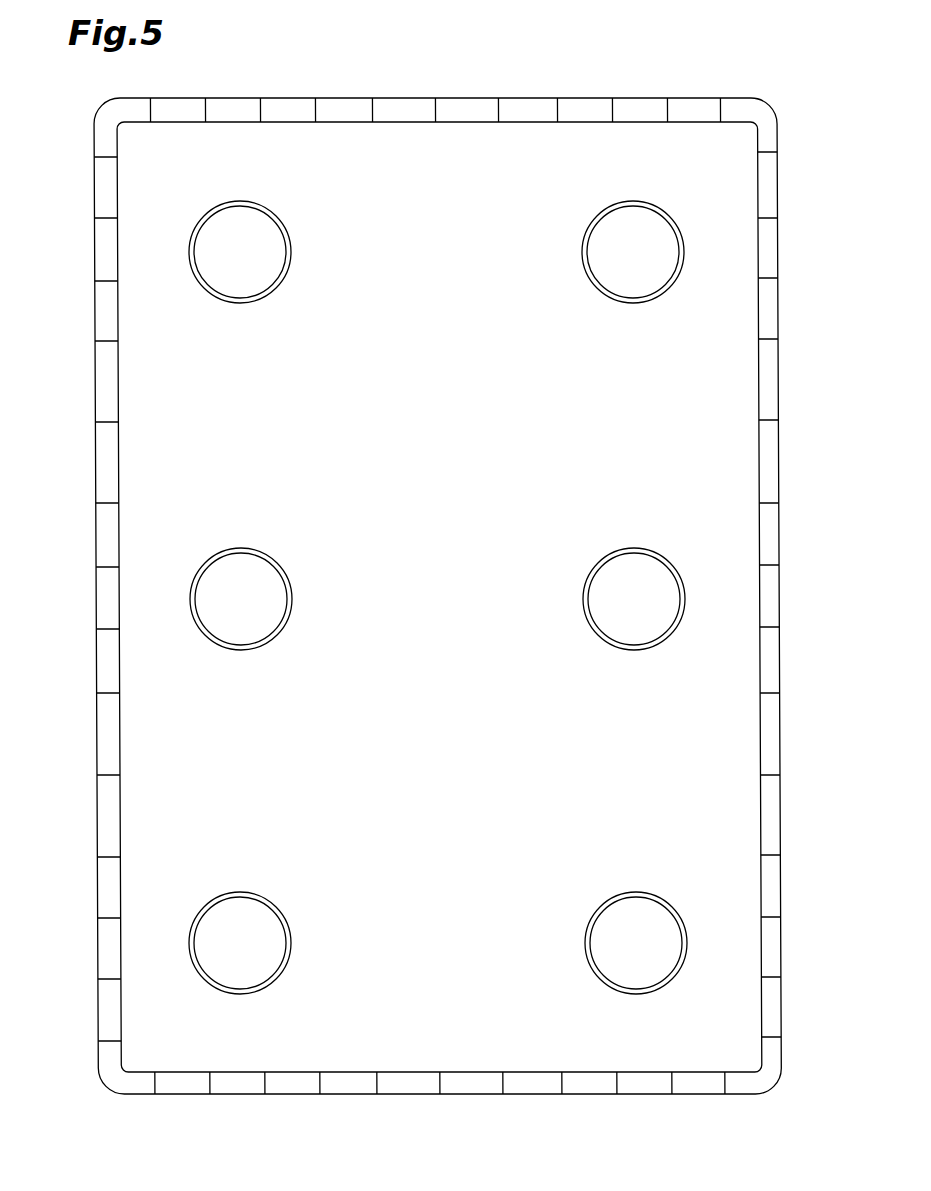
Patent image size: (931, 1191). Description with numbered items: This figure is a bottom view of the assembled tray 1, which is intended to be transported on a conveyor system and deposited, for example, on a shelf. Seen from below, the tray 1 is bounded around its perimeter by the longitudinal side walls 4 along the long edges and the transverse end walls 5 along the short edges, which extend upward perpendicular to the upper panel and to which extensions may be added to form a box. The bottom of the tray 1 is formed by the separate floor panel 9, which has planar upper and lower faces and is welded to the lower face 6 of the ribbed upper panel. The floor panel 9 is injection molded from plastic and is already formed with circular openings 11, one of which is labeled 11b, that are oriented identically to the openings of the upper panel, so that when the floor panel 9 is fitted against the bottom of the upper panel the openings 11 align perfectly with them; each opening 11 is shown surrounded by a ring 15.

The tray 1 is at (693, 79).
The longitudinal side walls 4 is at (100, 489).
The transverse end walls 5 is at (413, 100).
The lower face 6 is at (537, 424).
The floor panel 9 is at (347, 724).
The openings 11 is at (645, 233).
The opening 11b is at (226, 240).
The ring / collar 15 is at (256, 203).